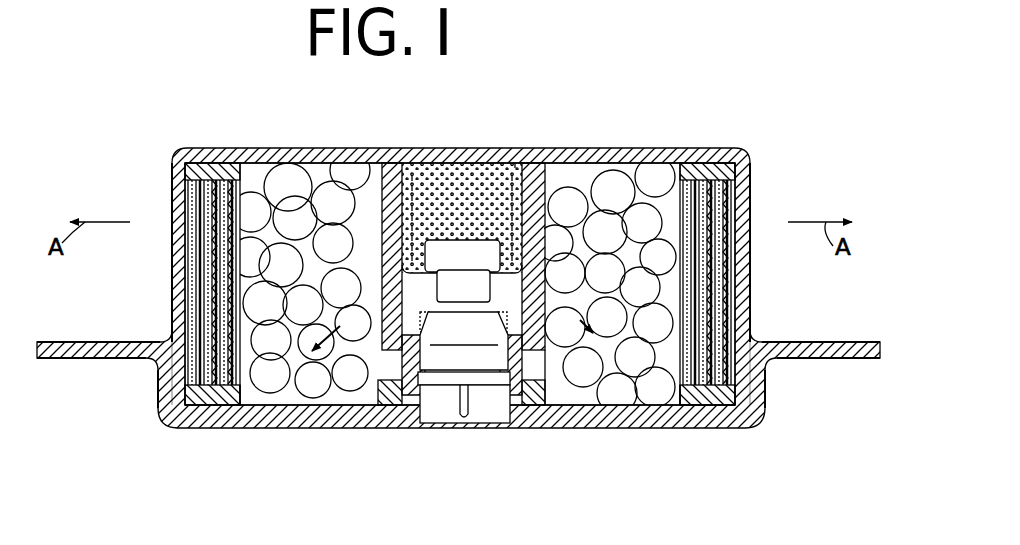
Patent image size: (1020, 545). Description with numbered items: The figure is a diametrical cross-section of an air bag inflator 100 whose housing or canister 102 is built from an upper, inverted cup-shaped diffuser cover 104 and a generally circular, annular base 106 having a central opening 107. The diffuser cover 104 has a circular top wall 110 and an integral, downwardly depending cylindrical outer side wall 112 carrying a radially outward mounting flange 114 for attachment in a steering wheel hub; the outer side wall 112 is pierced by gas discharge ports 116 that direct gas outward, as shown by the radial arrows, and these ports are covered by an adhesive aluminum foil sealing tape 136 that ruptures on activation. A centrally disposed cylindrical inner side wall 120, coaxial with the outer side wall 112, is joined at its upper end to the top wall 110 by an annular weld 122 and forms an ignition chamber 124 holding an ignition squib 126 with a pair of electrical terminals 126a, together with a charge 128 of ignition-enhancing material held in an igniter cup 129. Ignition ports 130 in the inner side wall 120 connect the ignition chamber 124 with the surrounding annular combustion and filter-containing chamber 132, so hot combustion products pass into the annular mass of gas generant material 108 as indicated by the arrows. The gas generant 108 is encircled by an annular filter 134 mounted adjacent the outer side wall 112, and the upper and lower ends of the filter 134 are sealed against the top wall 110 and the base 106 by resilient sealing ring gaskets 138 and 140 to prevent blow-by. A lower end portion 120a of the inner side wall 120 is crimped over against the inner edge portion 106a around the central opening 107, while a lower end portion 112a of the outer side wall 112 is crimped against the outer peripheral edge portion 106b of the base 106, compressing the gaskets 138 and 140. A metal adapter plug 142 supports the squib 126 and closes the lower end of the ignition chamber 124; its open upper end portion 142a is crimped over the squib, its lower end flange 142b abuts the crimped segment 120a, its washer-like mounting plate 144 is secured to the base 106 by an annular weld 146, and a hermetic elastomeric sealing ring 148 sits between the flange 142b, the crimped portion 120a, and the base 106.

The air bag inflator 100 is at (457, 303).
The housing or canister 102 is at (163, 432).
The diffuser cover 104 is at (748, 150).
The base 106 is at (640, 430).
The inner edge portion 106a is at (335, 426).
The outer peripheral edge portion 106b is at (182, 418).
The central opening 107 is at (515, 400).
The gas generant material 108 is at (300, 380).
The top wall 110 is at (285, 160).
The outer side wall 112 is at (176, 322).
The lower end portion of outer side wall 112a is at (182, 430).
The mounting flange 114 is at (75, 358).
The gas discharge ports 116 is at (177, 215).
The inner side wall 120 is at (558, 163).
The lower end portion of inner side wall 120a is at (425, 420).
The annular weld 122 is at (390, 163).
The ignition chamber 124 is at (440, 320).
The ignition squib 126 is at (500, 335).
The electrical terminals 126a is at (490, 372).
The charge of ignition-enhancing material 128 is at (482, 163).
The igniter cup 129 is at (515, 163).
The ignition ports 130 is at (368, 163).
The combustion and filter-containing chamber 132 is at (245, 425).
The annular filter 134 is at (215, 265).
The adhesive aluminum foil sealing tape 136 is at (195, 240).
The upper sealing ring gasket 138 is at (185, 162).
The lower sealing ring gasket 140 is at (190, 395).
The adapter plug 142 is at (468, 338).
The open upper end portion of adapter 142a is at (440, 395).
The lower end flange of adapter 142b is at (418, 395).
The mounting plate 144 is at (570, 400).
The annular weld 146 is at (390, 400).
The sealing ring or gasket 148 is at (600, 405).